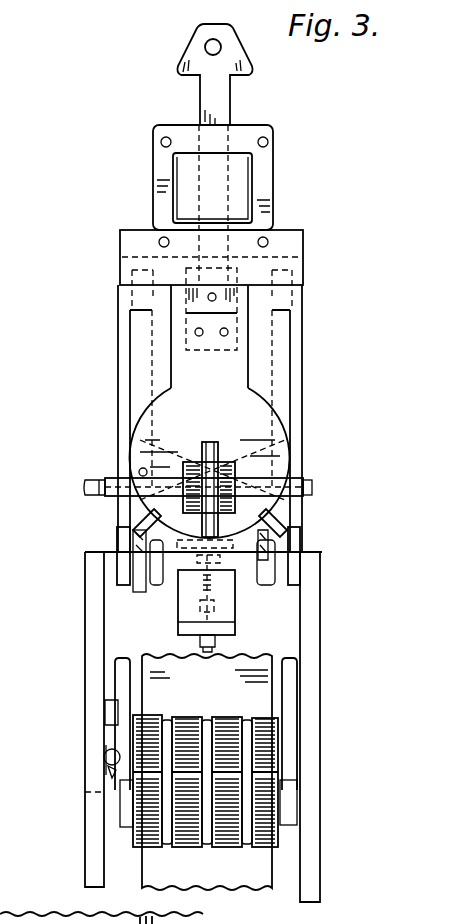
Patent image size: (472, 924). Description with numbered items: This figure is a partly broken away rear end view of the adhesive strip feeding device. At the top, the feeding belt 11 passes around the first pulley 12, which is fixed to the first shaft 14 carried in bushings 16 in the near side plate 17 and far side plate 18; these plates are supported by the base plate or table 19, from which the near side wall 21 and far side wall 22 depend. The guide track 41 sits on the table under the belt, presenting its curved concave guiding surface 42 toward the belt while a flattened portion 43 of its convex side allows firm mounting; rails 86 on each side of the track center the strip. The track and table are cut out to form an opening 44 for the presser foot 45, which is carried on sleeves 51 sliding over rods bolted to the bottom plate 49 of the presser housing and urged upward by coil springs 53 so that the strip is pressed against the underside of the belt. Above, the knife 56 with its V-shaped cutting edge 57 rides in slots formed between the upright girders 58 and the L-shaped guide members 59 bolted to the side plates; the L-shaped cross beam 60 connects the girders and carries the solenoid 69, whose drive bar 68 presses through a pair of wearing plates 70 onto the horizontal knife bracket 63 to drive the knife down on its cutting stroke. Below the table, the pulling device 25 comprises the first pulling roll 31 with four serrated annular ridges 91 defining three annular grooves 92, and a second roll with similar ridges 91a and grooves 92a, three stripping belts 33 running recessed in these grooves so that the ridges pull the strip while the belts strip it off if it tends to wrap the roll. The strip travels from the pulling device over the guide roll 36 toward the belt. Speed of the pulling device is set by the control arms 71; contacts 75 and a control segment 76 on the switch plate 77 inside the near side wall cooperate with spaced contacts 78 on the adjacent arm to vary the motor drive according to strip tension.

The feeding belt 11 is at (218, 470).
The first pulley 12 is at (202, 455).
The first shaft 14 is at (282, 478).
The bushings 16 is at (309, 474).
The near side plate 17 is at (120, 407).
The far side plate 18 is at (293, 397).
The base plate or table 19 is at (108, 563).
The near side wall 21 is at (95, 640).
The far side wall 22 is at (310, 627).
The pulling device 25 is at (227, 707).
The first pulling roll 31 is at (262, 750).
The stripping belts 33 is at (167, 762).
The guide roll 36 is at (152, 568).
The guide track 41 is at (294, 545).
The curved concave guiding surface 42 is at (124, 536).
The flattened portion 43 is at (240, 560).
The opening 44 is at (270, 572).
The presser foot 45 is at (190, 542).
The bottom plate 49 is at (227, 628).
The sleeves 51 is at (203, 605).
The coil springs 53 is at (203, 590).
The knife 56 is at (220, 400).
The V-shaped cutting edge 57 is at (146, 470).
The upright girders 58 is at (250, 365).
The L-shaped guide members 59 is at (137, 327).
The L-shaped cross beam 60 is at (288, 243).
The knife bracket 63 is at (222, 322).
The drive bar 68 is at (207, 243).
The solenoid 69 is at (240, 170).
The wearing plates 70 is at (190, 297).
The control arms 71 is at (120, 684).
The contacts 75 is at (104, 757).
The control segment 76 is at (105, 762).
The switch plate 77 is at (108, 708).
The spaced contacts 78 is at (105, 770).
The rails 86 is at (135, 510).
The annular ridges 91 is at (160, 734).
The ridges 91a is at (165, 848).
The annular grooves 92 is at (204, 715).
The grooves 92a is at (118, 817).